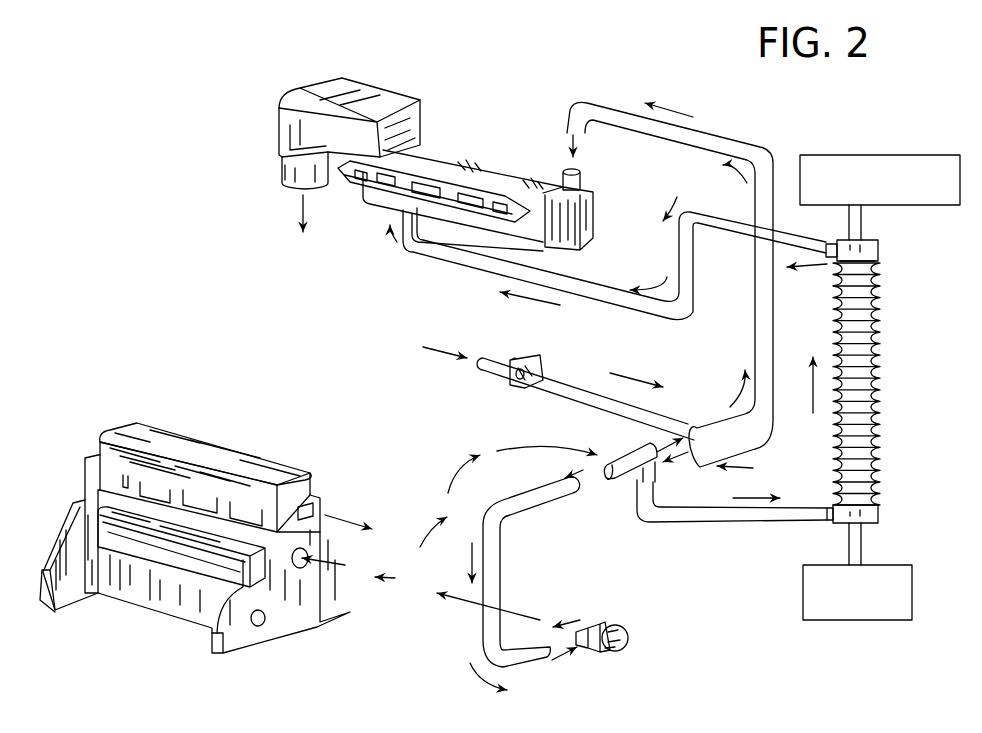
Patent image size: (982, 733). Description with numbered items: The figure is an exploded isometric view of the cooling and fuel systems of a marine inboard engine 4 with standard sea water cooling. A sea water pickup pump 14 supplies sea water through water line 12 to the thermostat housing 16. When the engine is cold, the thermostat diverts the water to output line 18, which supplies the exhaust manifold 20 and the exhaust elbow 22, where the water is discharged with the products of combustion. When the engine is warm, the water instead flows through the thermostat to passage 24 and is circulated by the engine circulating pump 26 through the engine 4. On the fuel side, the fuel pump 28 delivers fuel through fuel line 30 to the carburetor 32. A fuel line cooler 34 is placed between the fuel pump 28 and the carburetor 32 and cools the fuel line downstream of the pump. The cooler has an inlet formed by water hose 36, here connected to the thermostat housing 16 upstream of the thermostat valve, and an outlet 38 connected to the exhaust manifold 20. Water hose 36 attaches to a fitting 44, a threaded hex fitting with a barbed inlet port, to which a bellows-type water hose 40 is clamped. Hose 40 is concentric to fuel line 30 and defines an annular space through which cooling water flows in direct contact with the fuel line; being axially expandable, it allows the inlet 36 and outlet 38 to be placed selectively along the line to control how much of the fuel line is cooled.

The inboard engine 4 is at (203, 562).
The water line 12 is at (582, 385).
The sea water pickup pump 14 is at (513, 383).
The thermostat housing 16 is at (607, 460).
The output line 18 is at (753, 325).
The exhaust manifold 20 is at (460, 157).
The exhaust elbow 22 is at (380, 96).
The passage 24 is at (530, 507).
The engine circulating pump 26 is at (607, 625).
The fuel pump 28 is at (818, 610).
The fuel line 30 is at (866, 218).
The carburetor 32 is at (863, 155).
The fuel line cooler 34 is at (883, 358).
The inlet water hose 36 is at (783, 517).
The outlet 38 is at (802, 240).
The bellows-type water hose 40 is at (880, 297).
The fitting 44 is at (880, 512).